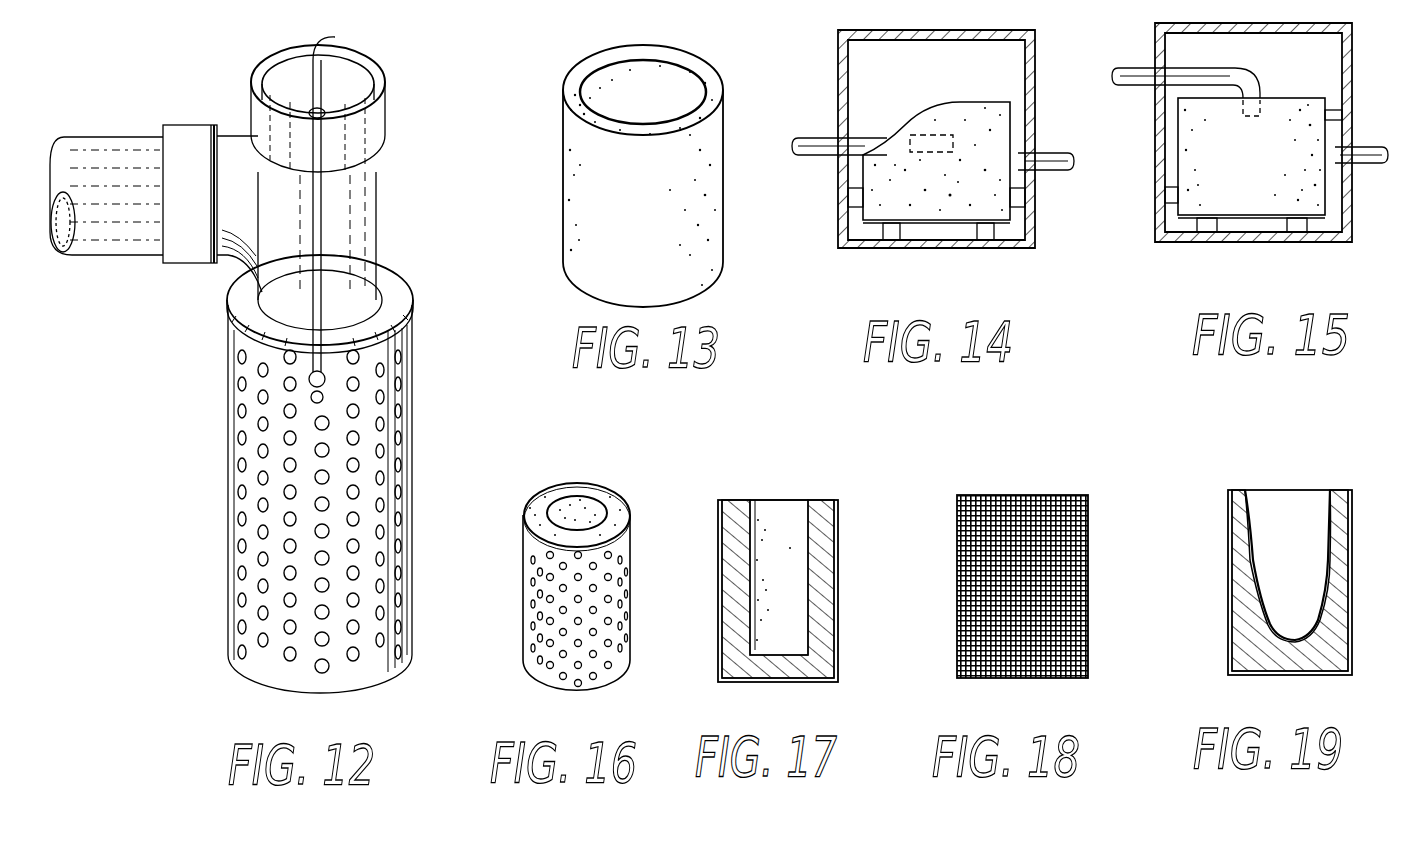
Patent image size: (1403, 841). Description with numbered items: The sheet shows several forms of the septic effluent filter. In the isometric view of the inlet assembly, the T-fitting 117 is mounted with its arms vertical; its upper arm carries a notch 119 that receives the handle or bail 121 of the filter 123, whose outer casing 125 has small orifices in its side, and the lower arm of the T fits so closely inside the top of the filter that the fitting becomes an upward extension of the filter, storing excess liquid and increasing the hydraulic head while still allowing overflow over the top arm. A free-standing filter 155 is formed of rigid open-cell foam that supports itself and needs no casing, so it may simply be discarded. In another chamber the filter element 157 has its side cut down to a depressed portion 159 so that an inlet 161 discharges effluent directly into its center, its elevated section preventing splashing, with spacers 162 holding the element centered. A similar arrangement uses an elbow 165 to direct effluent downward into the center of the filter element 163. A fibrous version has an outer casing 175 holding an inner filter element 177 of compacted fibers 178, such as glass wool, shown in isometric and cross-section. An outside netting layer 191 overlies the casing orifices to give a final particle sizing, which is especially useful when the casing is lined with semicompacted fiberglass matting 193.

In FIG. 12, the T-fitting 117 is at (353, 215).
In FIG. 12, the notch 119 is at (335, 37).
In FIG. 12, the handle or bail 121 is at (318, 210).
In FIG. 12, the filter 123 is at (228, 444).
In FIG. 12, the outer casing 125 is at (388, 422).
In FIG. 13, the porous sleeve 155 is at (601, 68).
In FIG. 14, the filter element 157 is at (922, 112).
In FIG. 14, the upper surface 159 is at (990, 102).
In FIG. 14, the inlet tube 161 is at (820, 138).
In FIG. 14, the spacers 162 is at (846, 200).
In FIG. 15, the spacers 162 is at (1338, 113).
In FIG. 15, the filter element 163 is at (1319, 95).
In FIG. 15, the inlet tube 165 is at (1231, 68).
In FIG. 16, the perforated cylinder 175 is at (537, 575).
In FIG. 17, the perforated cylinder 175 is at (838, 629).
In FIG. 19, the perforated cylinder 175 is at (1232, 578).
In FIG. 16, the inner filter element 177 is at (584, 486).
In FIG. 17, the inner filter element 177 is at (838, 569).
In FIG. 16, the fibers 178 is at (607, 488).
In FIG. 17, the fibers 178 is at (838, 516).
In FIG. 18, the outside netting layer 191 is at (1088, 508).
In FIG. 19, the fiberglass matting 193 is at (1232, 641).